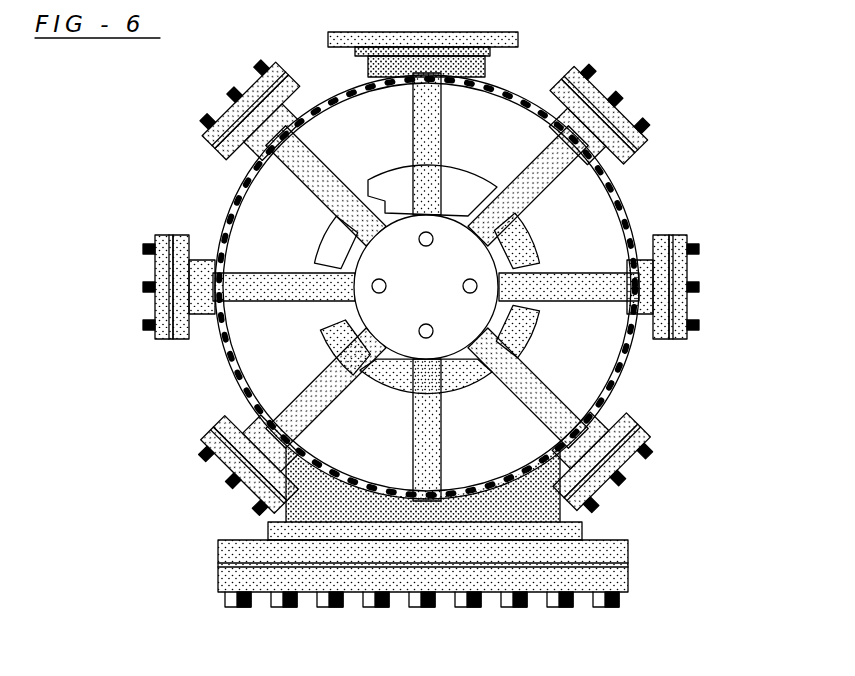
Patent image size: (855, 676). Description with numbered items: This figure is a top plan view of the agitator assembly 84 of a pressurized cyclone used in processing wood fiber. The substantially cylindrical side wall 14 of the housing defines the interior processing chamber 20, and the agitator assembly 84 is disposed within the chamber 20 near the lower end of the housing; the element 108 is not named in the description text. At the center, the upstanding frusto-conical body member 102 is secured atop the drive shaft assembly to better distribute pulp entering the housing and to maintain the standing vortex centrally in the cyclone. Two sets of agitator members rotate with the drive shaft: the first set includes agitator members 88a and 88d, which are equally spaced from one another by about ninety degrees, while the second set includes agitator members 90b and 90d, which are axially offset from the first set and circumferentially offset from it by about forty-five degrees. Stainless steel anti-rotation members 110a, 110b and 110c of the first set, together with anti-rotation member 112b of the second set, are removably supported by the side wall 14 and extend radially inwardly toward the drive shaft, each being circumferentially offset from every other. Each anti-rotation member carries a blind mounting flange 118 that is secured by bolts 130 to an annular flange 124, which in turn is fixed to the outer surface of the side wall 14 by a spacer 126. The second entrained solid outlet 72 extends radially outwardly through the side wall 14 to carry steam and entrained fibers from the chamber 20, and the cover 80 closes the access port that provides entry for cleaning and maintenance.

The side wall 14 is at (620, 210).
The interior processing chamber 20 is at (296, 362).
The second entrained solid outlet 72 is at (470, 44).
The cover 80 is at (440, 582).
The agitator assembly 84 is at (580, 42).
The agitator member 88a is at (326, 402).
The agitator member 88d is at (296, 176).
The agitator member 90b is at (418, 462).
The agitator member 90d is at (416, 128).
The frusto-conical body member 102 is at (462, 185).
The annular ring 108 is at (445, 86).
The first anti-rotation member 110a is at (276, 272).
The second anti-rotation member 110b is at (548, 392).
The third anti-rotation member 110c is at (536, 186).
The second anti-rotation member 112b is at (566, 276).
The blind mounting flange 118 is at (296, 60).
The annular flange 124 is at (218, 152).
The spacer 126 is at (242, 158).
The bolts 130 is at (206, 110).